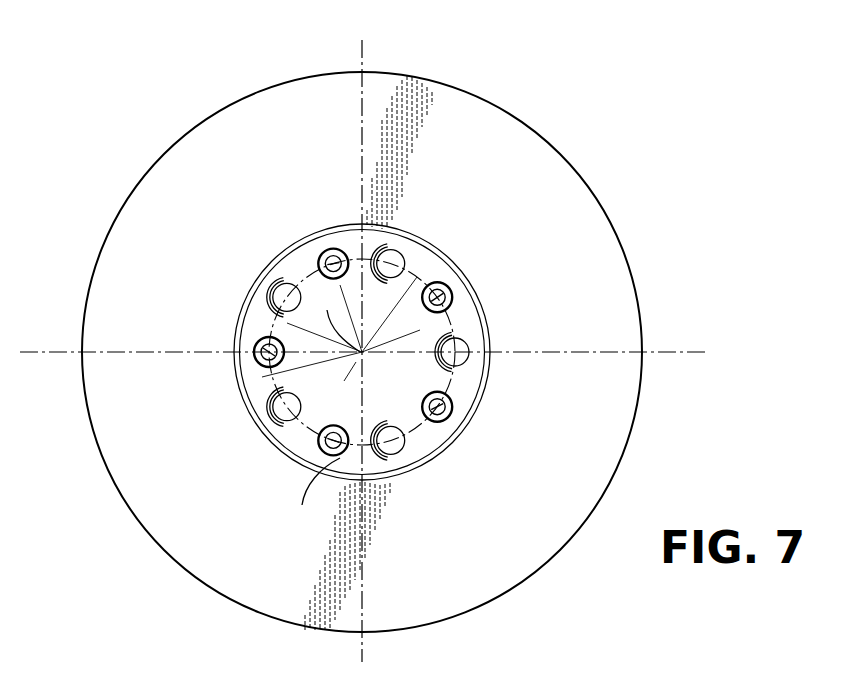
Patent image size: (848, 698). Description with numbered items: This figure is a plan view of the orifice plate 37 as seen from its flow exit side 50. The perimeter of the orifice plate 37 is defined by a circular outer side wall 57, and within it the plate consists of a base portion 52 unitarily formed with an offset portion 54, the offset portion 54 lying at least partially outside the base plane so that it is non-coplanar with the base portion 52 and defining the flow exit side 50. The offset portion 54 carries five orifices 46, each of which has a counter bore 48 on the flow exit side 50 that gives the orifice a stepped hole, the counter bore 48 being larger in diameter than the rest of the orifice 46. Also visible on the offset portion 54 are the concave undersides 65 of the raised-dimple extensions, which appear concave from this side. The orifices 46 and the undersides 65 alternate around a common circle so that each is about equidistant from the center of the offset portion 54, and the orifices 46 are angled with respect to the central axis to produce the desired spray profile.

The orifice plate 37 is at (657, 231).
The orifice 46 is at (320, 262).
The counter bore 48 is at (334, 248).
The flow exit side 50 is at (440, 326).
The base portion 52 is at (163, 418).
The offset portion 54 is at (422, 438).
The circular outer side wall 57 is at (517, 118).
The concave undersides of the extensions 65 is at (281, 288).